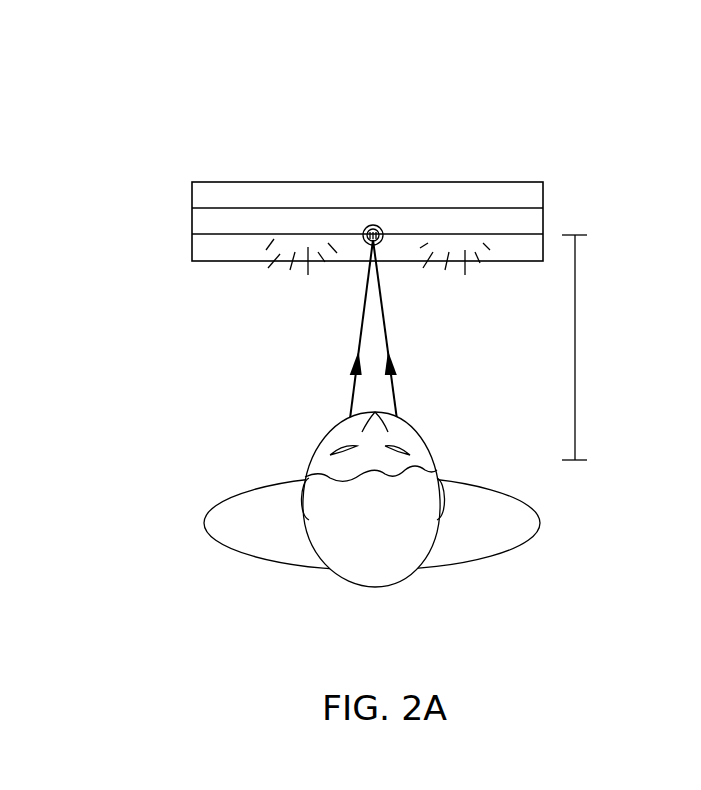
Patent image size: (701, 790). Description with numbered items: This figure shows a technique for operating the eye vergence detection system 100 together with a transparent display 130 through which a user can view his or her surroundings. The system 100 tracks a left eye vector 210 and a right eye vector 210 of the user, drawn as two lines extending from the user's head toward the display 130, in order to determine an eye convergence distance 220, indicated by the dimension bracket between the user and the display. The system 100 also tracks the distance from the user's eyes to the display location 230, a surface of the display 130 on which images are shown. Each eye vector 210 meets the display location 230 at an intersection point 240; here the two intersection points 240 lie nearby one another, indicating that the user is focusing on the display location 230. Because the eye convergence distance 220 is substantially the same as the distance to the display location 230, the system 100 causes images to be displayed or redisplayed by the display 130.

The eye vergence detection system 100 is at (243, 155).
The display 130 is at (241, 234).
The eye vector 210 is at (361, 312).
The eye convergence distance 220 is at (575, 360).
The display location 230 is at (458, 234).
The intersection point 240 is at (365, 229).